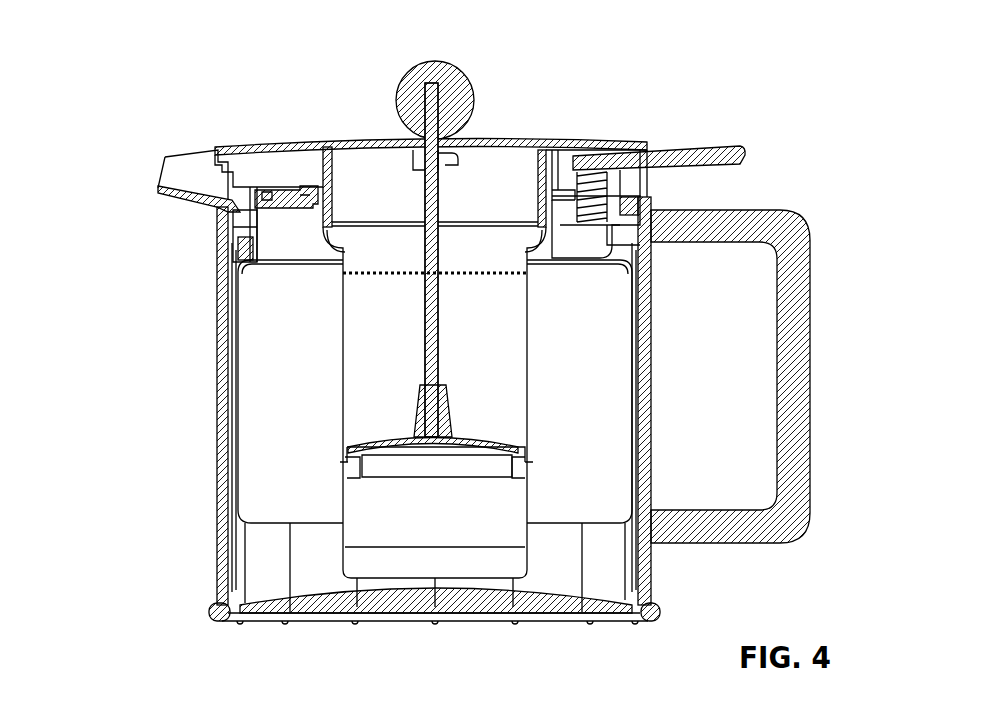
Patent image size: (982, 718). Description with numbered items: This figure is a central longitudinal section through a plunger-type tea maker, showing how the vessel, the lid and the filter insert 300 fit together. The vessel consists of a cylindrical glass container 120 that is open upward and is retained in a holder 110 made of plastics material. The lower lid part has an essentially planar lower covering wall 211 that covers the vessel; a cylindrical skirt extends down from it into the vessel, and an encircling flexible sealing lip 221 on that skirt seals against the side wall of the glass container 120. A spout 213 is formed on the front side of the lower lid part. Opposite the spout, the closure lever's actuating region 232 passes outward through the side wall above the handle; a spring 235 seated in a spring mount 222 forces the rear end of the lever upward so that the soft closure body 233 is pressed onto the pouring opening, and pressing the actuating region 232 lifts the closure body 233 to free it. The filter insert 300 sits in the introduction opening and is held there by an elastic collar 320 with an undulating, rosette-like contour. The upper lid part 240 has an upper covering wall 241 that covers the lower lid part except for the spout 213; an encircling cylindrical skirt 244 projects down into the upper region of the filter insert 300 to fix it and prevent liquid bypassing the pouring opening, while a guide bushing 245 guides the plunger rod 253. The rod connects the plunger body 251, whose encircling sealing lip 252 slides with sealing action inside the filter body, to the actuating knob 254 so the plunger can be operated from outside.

The holder 110 is at (218, 371).
The cylindrical glass container 120 is at (226, 316).
The lower covering wall 211 is at (560, 193).
The spout 213 is at (180, 188).
The sealing lip 221 is at (243, 249).
The spring mount 222 is at (620, 222).
The actuating region 232 is at (697, 155).
The closure body 233 is at (277, 200).
The spring 235 is at (609, 183).
The upper lid part 240 is at (535, 116).
The upper covering wall 241 is at (358, 142).
The cylindrical skirt 244 is at (323, 157).
The guide bushing 245 is at (443, 163).
The plunger body 251 is at (522, 446).
The sealing lip 252 is at (525, 462).
The plunger rod 253 is at (434, 312).
The actuating knob 254 is at (408, 108).
The filter insert 300 is at (495, 363).
The collar 320 is at (545, 200).